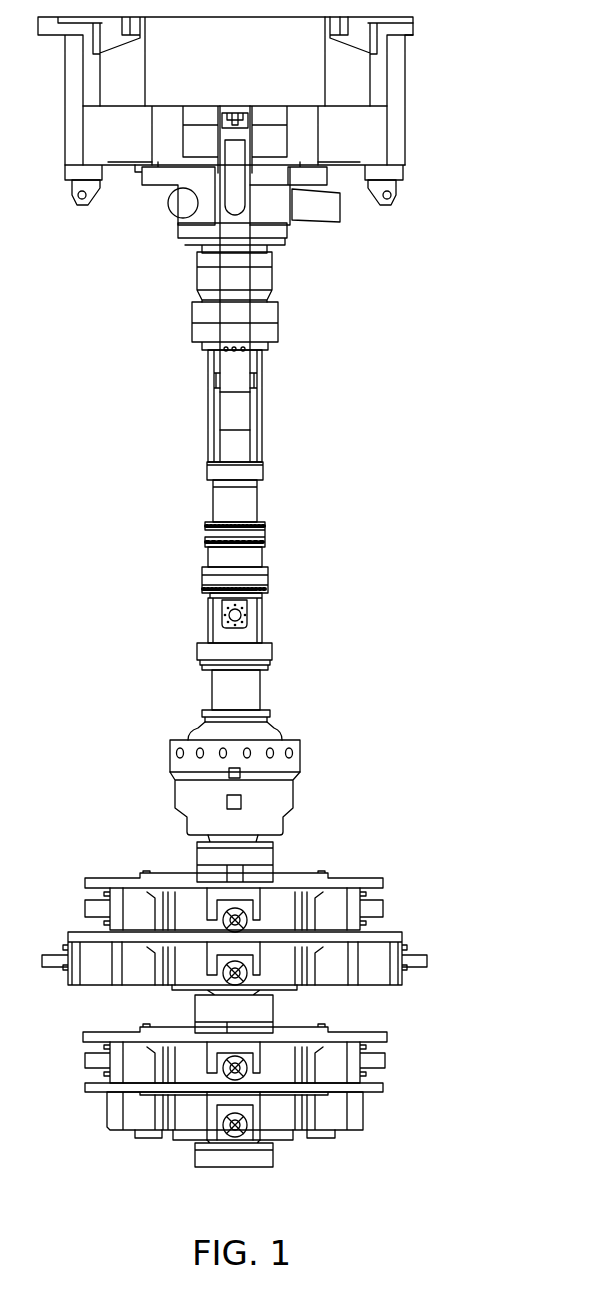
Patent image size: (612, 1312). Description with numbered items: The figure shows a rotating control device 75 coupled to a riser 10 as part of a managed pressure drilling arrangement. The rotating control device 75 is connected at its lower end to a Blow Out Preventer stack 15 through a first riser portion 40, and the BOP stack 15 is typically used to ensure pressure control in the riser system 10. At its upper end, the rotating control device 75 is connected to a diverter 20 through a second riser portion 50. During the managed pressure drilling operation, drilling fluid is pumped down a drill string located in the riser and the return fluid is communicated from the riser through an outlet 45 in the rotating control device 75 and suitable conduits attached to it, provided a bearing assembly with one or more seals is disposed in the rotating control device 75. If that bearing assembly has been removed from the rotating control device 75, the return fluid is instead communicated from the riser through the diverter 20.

The riser 10 is at (165, 397).
The Blow Out Preventer (BOP) stack 15 is at (437, 912).
The diverter 20 is at (357, 220).
The first riser portion 40 is at (262, 690).
The outlet 45 is at (243, 617).
The second riser portion 50 is at (247, 502).
The rotating control device 75 is at (288, 587).